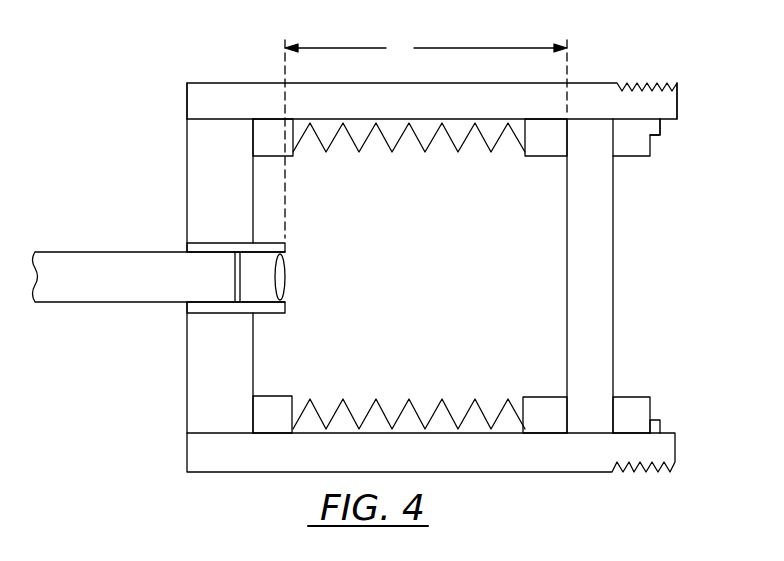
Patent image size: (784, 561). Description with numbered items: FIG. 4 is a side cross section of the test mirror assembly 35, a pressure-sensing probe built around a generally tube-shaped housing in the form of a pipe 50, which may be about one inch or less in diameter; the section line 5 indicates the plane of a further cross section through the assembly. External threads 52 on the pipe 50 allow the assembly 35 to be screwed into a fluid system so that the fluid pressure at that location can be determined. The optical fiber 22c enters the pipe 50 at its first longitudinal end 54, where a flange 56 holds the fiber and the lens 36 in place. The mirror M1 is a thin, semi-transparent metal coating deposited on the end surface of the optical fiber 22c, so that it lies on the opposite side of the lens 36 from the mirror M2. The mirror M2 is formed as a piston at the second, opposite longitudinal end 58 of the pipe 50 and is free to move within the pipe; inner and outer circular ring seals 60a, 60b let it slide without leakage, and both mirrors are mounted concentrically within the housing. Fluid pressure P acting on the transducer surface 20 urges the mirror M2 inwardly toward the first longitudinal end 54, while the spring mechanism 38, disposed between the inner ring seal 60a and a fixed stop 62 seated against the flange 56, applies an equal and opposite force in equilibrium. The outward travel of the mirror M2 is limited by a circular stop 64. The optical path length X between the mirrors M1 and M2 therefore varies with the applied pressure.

The transducer surface 20 is at (613, 233).
The optical fiber 22c is at (92, 262).
The assembly 35 is at (125, 133).
The lens 36 is at (283, 268).
The spring mechanism 38 is at (378, 399).
The pipe 50 is at (228, 83).
The threads 52 is at (646, 54).
The first longitudinal end 54 is at (187, 95).
The flange 56 is at (192, 170).
The second longitudinal end 58 is at (677, 101).
The inner circular ring seal 60a is at (535, 397).
The outer circular ring seal 60b is at (638, 397).
The fixed stop 62 is at (268, 397).
The circular stop 64 is at (660, 426).
The mirror M1 is at (247, 298).
The mirror M2 is at (567, 261).
The pressure P is at (628, 260).
The optical path length X is at (426, 137).
The section line 5- 5 is at (710, 73).